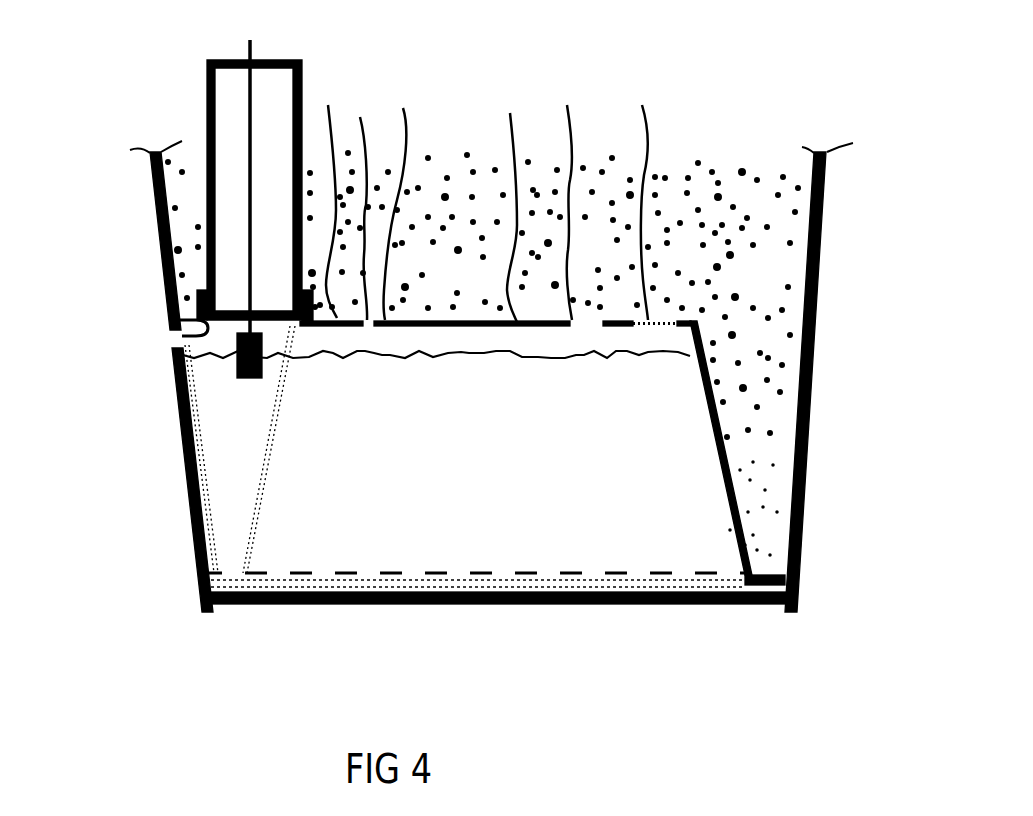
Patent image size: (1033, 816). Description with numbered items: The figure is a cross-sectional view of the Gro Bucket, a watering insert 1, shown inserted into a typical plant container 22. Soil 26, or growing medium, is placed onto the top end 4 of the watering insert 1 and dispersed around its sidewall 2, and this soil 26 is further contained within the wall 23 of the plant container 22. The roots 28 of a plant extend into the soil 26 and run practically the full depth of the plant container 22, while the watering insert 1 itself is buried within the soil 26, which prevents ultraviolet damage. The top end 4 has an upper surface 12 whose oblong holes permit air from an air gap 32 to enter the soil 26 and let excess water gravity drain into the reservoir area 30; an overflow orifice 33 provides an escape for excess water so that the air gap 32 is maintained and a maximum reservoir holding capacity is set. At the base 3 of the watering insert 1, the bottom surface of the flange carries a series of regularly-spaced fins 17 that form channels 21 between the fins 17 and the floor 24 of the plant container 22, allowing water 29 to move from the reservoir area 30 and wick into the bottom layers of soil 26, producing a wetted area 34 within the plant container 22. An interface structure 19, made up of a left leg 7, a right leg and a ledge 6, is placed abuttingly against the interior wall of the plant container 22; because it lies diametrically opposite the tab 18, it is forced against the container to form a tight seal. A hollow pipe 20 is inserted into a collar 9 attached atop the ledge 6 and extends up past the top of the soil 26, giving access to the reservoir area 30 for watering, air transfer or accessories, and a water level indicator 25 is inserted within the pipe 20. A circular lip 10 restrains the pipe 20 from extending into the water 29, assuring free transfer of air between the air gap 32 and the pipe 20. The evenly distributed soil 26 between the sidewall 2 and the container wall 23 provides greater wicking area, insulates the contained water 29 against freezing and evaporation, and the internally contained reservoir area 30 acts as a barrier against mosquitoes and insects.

The watering insert 1 is at (800, 448).
The sidewall 2 is at (723, 455).
The base 3 is at (660, 573).
The top end 4 is at (495, 295).
The ledge 6 is at (200, 320).
The left leg 7 is at (194, 449).
The collar 9 is at (202, 302).
The circular lip 10 is at (205, 330).
The upper surface 12 is at (392, 322).
The fins 17 is at (472, 652).
The tab 18 is at (773, 575).
The interface structure 19 is at (198, 477).
The pipe 20 is at (205, 96).
The channels 21 is at (482, 587).
The plant container 22 is at (488, 375).
The wall 23 is at (148, 158).
The floor 24 is at (680, 605).
The water level indicator 25 is at (244, 43).
The soil 26 is at (767, 238).
The roots 28 is at (652, 111).
The water 29 is at (237, 352).
The reservoir area 30 is at (642, 396).
The air gap 32 is at (486, 338).
The overflow orifice 33 is at (166, 344).
The wetted area 34 is at (782, 387).